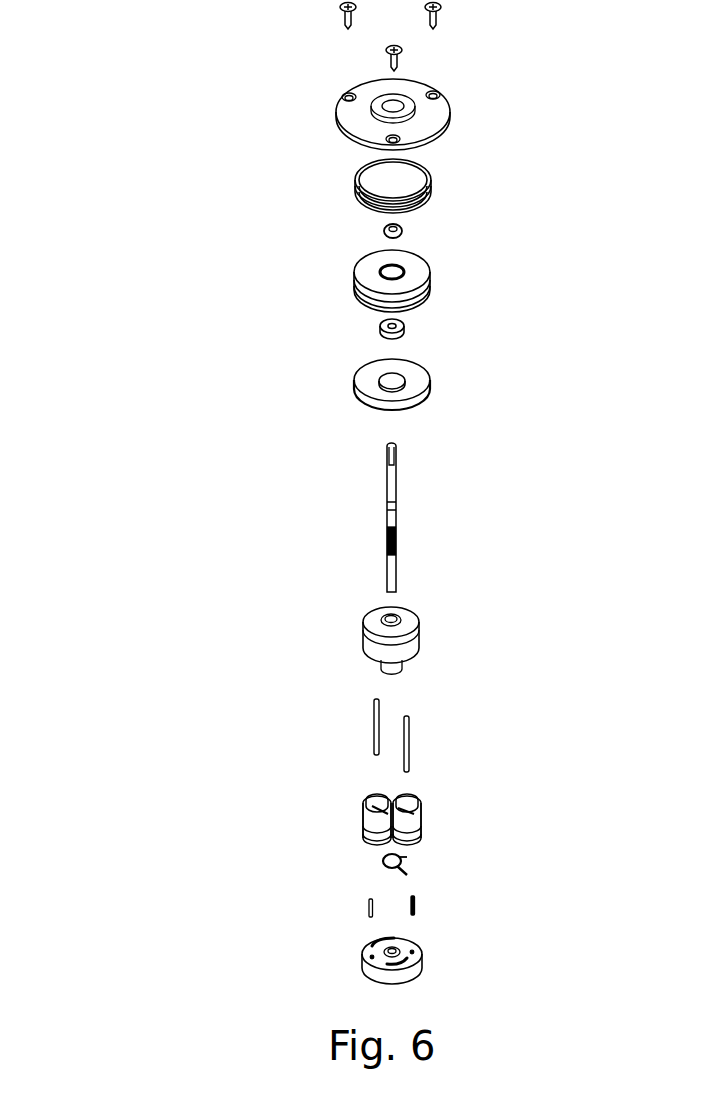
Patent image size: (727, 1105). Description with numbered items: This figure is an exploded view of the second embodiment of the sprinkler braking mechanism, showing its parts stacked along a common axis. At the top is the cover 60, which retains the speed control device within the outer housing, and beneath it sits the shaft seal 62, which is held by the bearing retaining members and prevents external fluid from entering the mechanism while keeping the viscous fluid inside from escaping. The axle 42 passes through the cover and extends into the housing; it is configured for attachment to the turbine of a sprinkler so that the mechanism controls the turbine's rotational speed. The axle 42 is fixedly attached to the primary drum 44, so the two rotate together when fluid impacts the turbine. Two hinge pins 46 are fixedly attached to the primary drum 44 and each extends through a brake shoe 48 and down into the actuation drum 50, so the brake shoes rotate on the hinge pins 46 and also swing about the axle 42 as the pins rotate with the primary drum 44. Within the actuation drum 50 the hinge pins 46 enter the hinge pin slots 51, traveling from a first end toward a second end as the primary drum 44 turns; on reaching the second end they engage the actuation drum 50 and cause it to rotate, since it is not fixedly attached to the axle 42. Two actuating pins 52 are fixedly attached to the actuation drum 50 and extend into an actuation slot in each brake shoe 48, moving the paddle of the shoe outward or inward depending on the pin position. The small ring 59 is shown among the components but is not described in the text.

The cover 60 is at (449, 117).
The shaft seal 62 is at (384, 233).
The axle 42 is at (394, 516).
The primary drum 44 is at (420, 637).
The hinge pins 46 is at (376, 729).
The brake shoe 48 is at (366, 820).
The retaining ring 59 is at (403, 856).
The actuation drum 50 is at (362, 972).
The hinge pin slots 51 is at (412, 966).
The actuating pins 52 is at (416, 898).